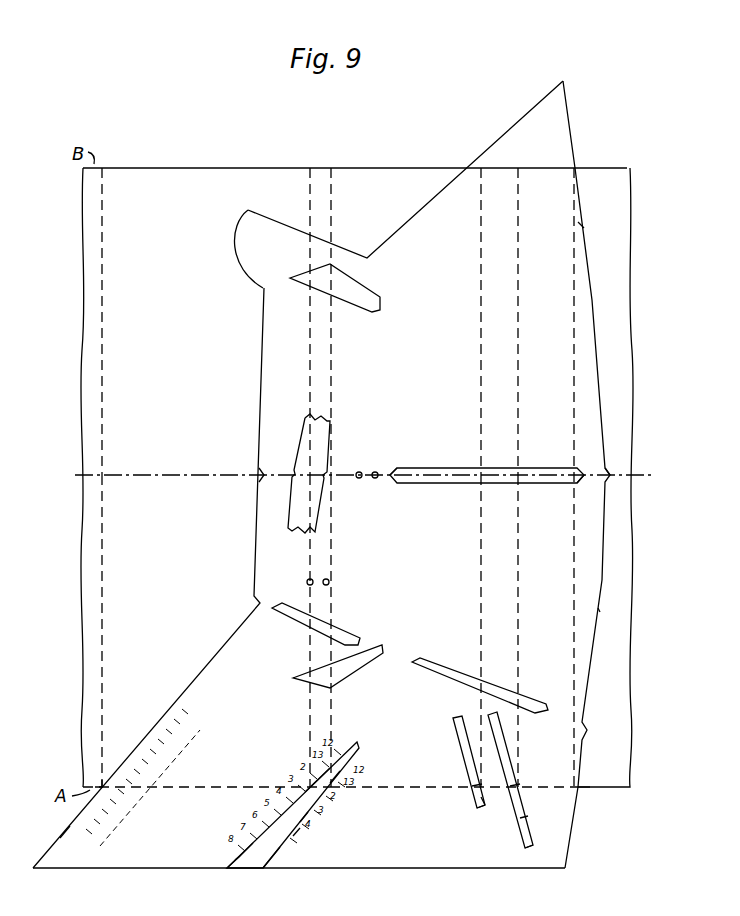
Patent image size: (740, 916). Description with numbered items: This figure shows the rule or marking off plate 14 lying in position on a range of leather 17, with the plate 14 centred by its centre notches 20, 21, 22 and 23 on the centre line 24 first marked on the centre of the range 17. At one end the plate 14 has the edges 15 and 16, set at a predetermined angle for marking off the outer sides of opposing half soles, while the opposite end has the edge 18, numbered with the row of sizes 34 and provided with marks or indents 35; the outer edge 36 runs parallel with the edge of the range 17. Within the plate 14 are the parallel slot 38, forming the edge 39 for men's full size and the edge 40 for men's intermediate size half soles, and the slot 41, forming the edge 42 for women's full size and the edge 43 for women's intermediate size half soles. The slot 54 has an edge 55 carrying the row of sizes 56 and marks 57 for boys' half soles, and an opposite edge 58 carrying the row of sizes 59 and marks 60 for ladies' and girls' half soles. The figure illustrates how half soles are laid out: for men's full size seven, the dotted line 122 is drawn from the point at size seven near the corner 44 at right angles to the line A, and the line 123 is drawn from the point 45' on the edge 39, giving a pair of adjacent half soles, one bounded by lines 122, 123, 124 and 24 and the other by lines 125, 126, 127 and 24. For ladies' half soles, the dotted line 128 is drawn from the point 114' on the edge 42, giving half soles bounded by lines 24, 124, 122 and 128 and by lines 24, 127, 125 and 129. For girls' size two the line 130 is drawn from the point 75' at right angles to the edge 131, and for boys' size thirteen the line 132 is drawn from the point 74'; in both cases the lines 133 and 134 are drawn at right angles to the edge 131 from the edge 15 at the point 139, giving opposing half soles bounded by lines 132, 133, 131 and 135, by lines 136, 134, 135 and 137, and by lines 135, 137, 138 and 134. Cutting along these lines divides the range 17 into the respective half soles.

The rule or marking off plate 14 is at (435, 326).
The edge 15 is at (598, 611).
The edge 16 is at (589, 280).
The range of leather 17 is at (85, 378).
The edge 18 is at (207, 662).
The centre notch 20 is at (257, 481).
The centre notch 21 is at (390, 481).
The centre notch 22 is at (585, 481).
The centre notch 23 is at (606, 473).
The centre line 24 is at (180, 478).
The row of sizes 34 is at (80, 843).
The marks or indents 35 is at (58, 845).
The outer edge 36 is at (406, 870).
The parallel slot 38 is at (522, 819).
The edge 39 is at (533, 839).
The edge 40 is at (523, 840).
The slot 41 is at (463, 759).
The edge 42 is at (497, 795).
The edge 43 is at (479, 799).
The corner 44 is at (100, 786).
The point 45' is at (536, 771).
The slot 54 is at (258, 864).
The edge 55 is at (276, 854).
The row of sizes 56 is at (310, 842).
The marks 57 is at (293, 836).
The edge 58 is at (228, 871).
The row of sizes 59 is at (239, 840).
The marks 60 is at (241, 847).
The point 74' is at (360, 793).
The point 75' is at (299, 777).
The point 114' is at (513, 760).
The dotted line 122 is at (103, 645).
The line 123 is at (518, 621).
The line 124 is at (203, 790).
The line 125 is at (103, 337).
The line 126 is at (518, 363).
The line 127 is at (222, 170).
The dotted line 128 is at (481, 584).
The line 129 is at (480, 374).
The line 130 is at (311, 721).
The edge 131 is at (408, 791).
The line 132 is at (332, 715).
The line 133 is at (577, 662).
The line 134 is at (582, 226).
The line 135 is at (462, 483).
The line 136 is at (311, 381).
The line 137 is at (432, 170).
The line 138 is at (332, 396).
The point 139 is at (583, 790).